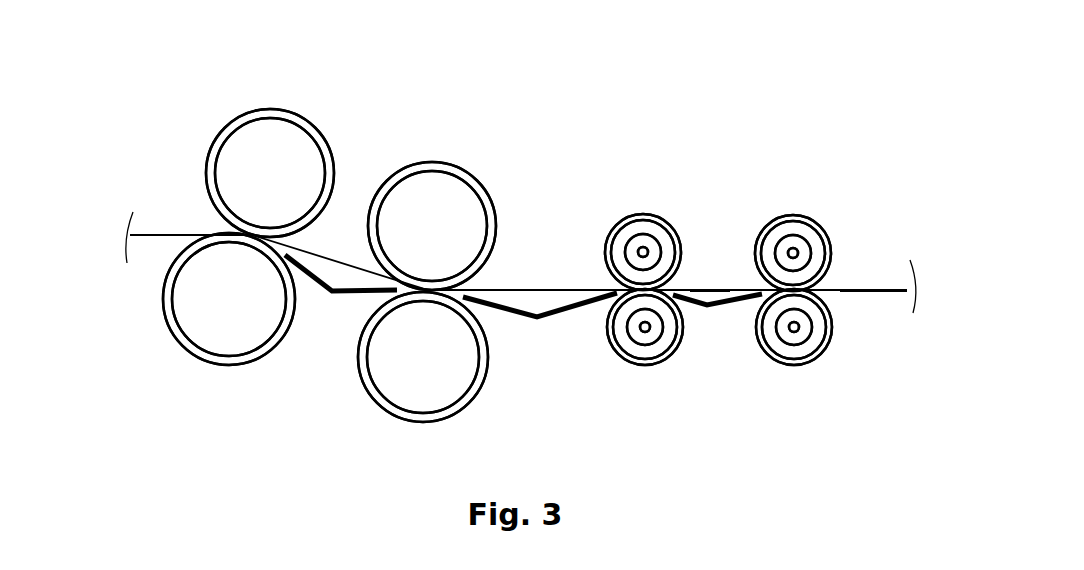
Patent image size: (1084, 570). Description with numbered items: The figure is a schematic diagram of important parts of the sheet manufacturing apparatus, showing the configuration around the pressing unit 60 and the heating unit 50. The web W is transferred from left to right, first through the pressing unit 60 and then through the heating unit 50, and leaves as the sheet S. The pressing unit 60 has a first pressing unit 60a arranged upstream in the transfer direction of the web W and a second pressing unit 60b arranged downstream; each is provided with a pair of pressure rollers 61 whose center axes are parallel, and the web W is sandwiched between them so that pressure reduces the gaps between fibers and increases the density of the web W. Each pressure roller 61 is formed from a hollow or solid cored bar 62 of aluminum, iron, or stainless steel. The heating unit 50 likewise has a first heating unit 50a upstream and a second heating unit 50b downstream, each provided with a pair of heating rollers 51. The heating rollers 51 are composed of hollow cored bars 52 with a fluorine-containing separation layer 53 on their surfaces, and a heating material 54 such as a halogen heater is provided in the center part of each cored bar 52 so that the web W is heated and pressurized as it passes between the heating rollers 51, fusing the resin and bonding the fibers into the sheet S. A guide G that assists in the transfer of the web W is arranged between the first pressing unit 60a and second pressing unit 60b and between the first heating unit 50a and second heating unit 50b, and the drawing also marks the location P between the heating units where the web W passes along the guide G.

The heating unit 50 is at (700, 138).
The first heating unit 50a is at (686, 176).
The second heating unit 50b is at (824, 176).
The heating rollers 51 is at (641, 215).
The cored bar 52 is at (629, 237).
The separation layer 53 is at (625, 224).
The heating material 54 is at (638, 253).
The pressing unit 60 is at (536, 102).
The first pressing unit 60a is at (313, 94).
The second pressing unit 60b is at (466, 136).
The pressure rollers 61 is at (236, 118).
The cored bar 62 is at (322, 163).
The web W is at (160, 232).
The guide G is at (335, 300).
The pressed portion P is at (711, 289).
The sheet S is at (862, 290).